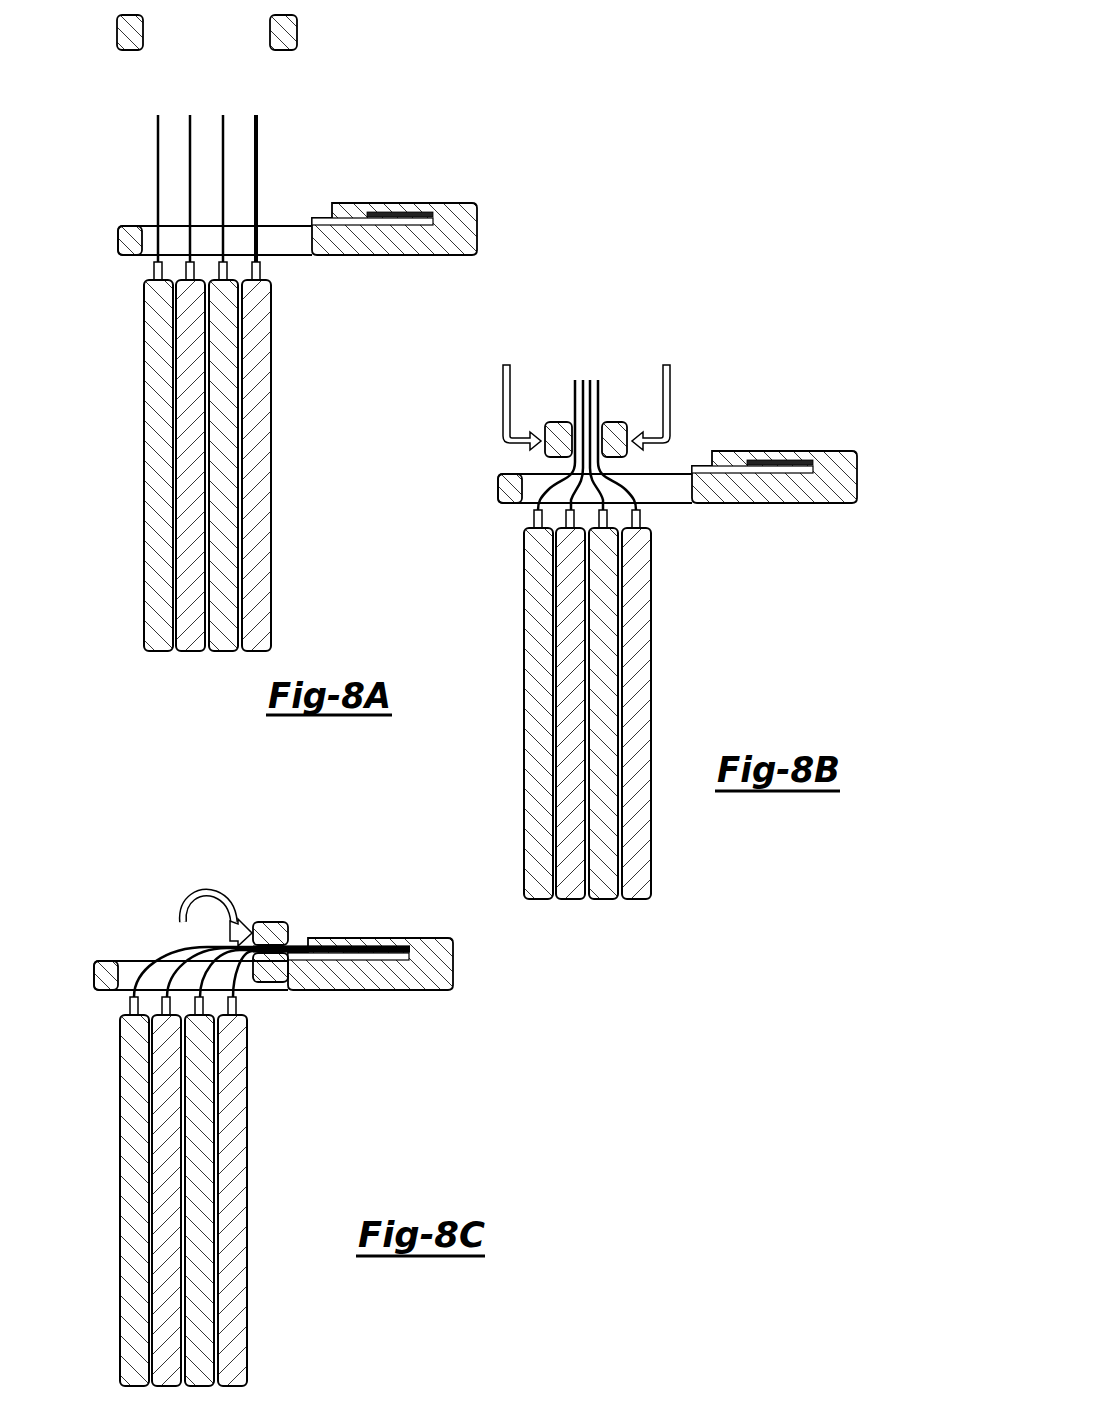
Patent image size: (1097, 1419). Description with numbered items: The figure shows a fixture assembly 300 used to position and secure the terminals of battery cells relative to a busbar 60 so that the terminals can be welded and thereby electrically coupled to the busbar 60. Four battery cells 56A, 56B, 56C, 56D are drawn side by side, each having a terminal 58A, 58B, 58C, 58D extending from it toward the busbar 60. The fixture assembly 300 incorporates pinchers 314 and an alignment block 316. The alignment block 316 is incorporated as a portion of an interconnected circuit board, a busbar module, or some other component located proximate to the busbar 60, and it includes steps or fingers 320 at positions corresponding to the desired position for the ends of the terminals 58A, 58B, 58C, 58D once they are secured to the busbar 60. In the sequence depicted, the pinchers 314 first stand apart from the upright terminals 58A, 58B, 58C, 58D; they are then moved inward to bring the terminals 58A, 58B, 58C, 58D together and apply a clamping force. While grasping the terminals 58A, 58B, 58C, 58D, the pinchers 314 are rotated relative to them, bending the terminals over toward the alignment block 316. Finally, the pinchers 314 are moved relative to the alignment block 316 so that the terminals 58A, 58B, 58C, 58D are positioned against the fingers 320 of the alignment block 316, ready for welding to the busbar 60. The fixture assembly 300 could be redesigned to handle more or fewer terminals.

In FIG. 8A, the fixture assembly 300 is at (287, 333).
In FIG. 8B, the fixture assembly 300 is at (654, 605).
In FIG. 8C, the fixture assembly 300 is at (251, 1122).
In FIG. 8A, the pinchers 314 is at (137, 33).
In FIG. 8B, the pinchers 314 is at (562, 422).
In FIG. 8C, the pinchers 314 is at (275, 921).
In FIG. 8A, the alignment block 316 is at (462, 222).
In FIG. 8B, the alignment block 316 is at (843, 470).
In FIG. 8C, the alignment block 316 is at (440, 954).
In FIG. 8A, the fingers 320 is at (417, 213).
In FIG. 8B, the fingers 320 is at (780, 462).
In FIG. 8C, the fingers 320 is at (392, 945).
In FIG. 8A, the busbar 60 is at (403, 226).
In FIG. 8B, the busbar 60 is at (783, 475).
In FIG. 8C, the busbar 60 is at (380, 963).
In FIG. 8A, the battery cell 56A is at (254, 419).
In FIG. 8A, the battery cell 56B is at (221, 365).
In FIG. 8A, the battery cell 56C is at (196, 365).
In FIG. 8A, the battery cell 56D is at (165, 419).
In FIG. 8A, the terminal 58A is at (256, 115).
In FIG. 8B, the terminal 58A is at (641, 498).
In FIG. 8A, the terminal 58B is at (223, 115).
In FIG. 8B, the terminal 58B is at (634, 486).
In FIG. 8A, the terminal 58C is at (190, 115).
In FIG. 8B, the terminal 58C is at (545, 494).
In FIG. 8A, the terminal 58D is at (158, 115).
In FIG. 8B, the terminal 58D is at (550, 483).